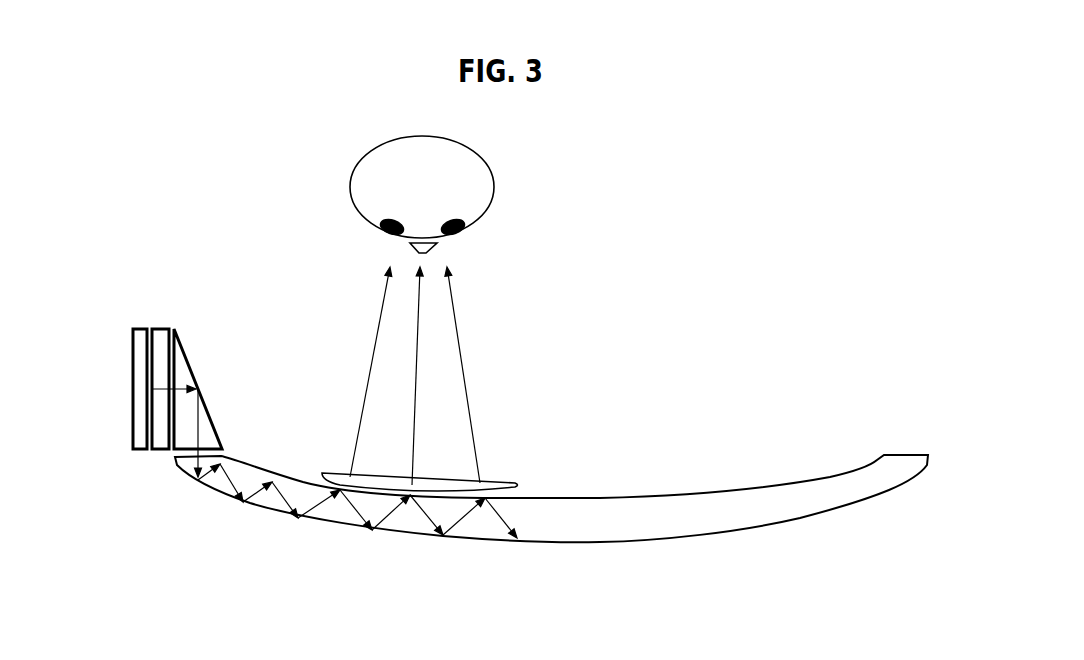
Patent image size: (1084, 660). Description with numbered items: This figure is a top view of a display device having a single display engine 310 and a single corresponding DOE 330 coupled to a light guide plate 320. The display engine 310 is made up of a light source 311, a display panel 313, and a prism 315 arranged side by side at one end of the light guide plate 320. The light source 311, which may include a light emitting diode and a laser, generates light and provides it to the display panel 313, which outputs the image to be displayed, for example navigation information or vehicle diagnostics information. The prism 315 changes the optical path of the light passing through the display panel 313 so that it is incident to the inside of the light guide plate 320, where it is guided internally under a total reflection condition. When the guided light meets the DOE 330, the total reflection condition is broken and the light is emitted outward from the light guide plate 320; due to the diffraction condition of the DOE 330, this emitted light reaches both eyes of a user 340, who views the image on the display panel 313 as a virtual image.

The display engine 310 is at (248, 262).
The light source 311 is at (133, 331).
The display panel 313 is at (157, 330).
The prism 315 is at (186, 354).
The light guide plate 320 is at (757, 530).
The DOE 330 is at (518, 477).
The user 340 is at (480, 156).